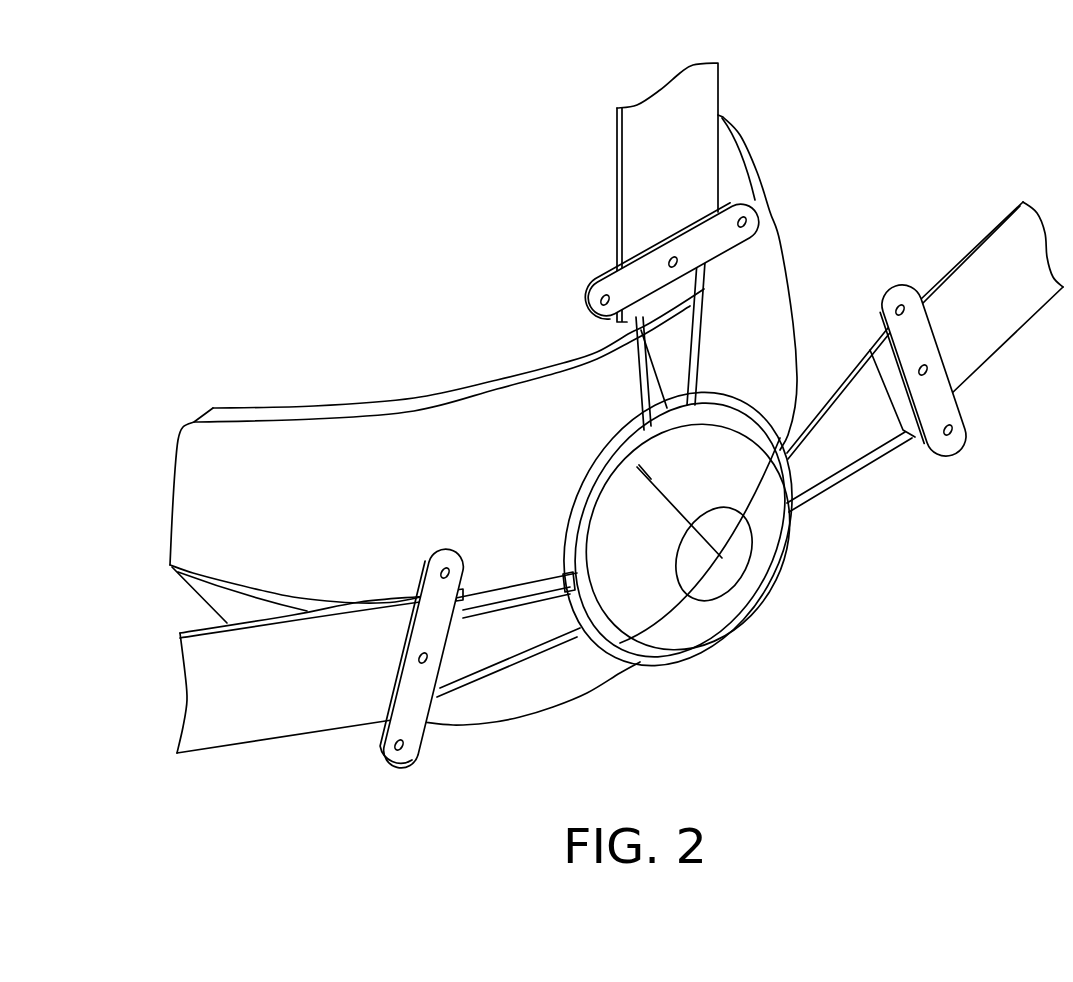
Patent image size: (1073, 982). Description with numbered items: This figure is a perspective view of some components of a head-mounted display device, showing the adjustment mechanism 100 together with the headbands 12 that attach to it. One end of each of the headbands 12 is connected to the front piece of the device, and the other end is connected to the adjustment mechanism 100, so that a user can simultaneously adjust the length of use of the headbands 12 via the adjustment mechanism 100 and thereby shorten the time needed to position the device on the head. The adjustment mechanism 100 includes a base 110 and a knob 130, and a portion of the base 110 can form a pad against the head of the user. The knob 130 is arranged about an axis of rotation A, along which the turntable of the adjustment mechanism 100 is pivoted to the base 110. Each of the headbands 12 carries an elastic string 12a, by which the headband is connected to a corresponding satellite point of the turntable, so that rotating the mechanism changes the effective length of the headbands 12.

The headbands 12 is at (703, 90).
The elastic string 12a is at (703, 305).
The adjustment mechanism 100 is at (568, 449).
The base 110 is at (487, 422).
The knob 130 is at (673, 632).
The axis of rotation A is at (718, 556).